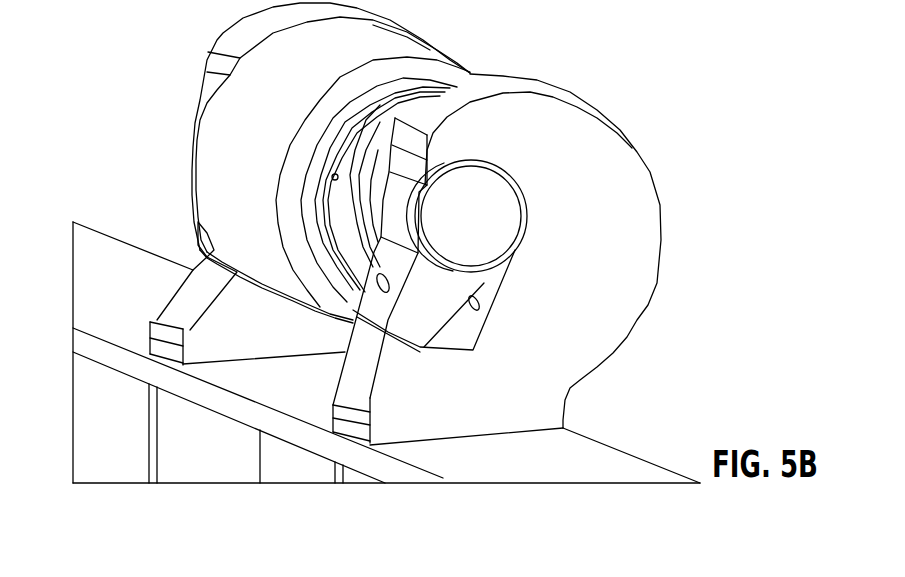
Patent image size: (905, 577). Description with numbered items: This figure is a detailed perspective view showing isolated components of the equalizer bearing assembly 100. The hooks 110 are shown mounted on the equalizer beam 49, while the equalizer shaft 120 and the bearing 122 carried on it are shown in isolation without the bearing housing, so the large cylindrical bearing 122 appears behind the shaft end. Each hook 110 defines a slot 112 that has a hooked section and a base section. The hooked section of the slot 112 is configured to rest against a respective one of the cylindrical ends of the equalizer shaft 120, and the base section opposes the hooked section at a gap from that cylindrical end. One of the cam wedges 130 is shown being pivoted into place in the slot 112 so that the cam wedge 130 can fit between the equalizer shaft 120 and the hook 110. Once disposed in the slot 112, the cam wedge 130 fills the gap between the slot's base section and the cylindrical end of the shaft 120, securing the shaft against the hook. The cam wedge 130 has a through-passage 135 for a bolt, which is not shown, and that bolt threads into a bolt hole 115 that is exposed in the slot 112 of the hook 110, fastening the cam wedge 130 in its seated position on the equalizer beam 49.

The equalizer bearing assembly 100 is at (428, 243).
The hook 110 is at (577, 251).
The slot 112 is at (511, 210).
The equalizer shaft 120 is at (509, 216).
The bearing 122 is at (359, 163).
The cam wedge 130 is at (332, 280).
The through-passage 135 is at (337, 332).
The bolt hole 115 is at (492, 315).
The equalizer beam 49 is at (386, 352).